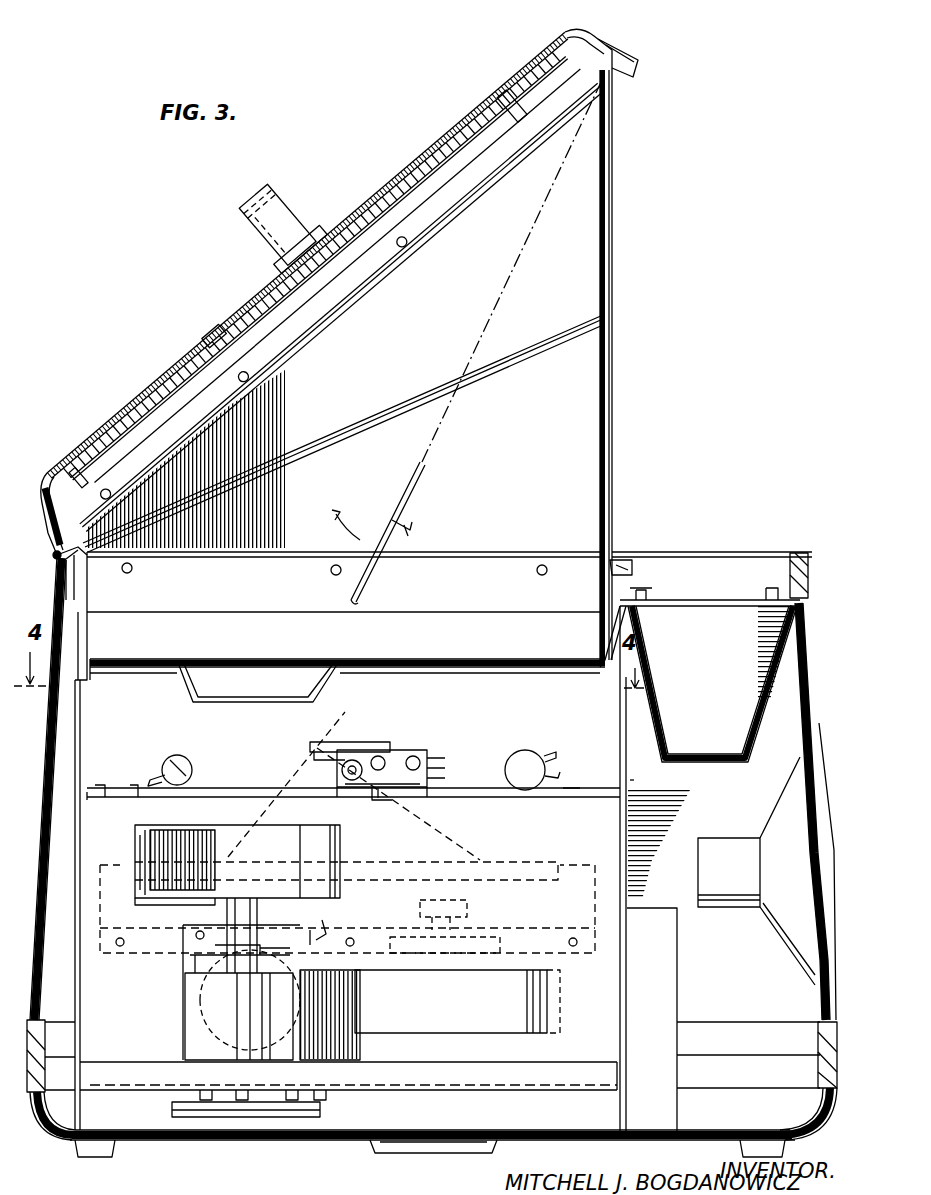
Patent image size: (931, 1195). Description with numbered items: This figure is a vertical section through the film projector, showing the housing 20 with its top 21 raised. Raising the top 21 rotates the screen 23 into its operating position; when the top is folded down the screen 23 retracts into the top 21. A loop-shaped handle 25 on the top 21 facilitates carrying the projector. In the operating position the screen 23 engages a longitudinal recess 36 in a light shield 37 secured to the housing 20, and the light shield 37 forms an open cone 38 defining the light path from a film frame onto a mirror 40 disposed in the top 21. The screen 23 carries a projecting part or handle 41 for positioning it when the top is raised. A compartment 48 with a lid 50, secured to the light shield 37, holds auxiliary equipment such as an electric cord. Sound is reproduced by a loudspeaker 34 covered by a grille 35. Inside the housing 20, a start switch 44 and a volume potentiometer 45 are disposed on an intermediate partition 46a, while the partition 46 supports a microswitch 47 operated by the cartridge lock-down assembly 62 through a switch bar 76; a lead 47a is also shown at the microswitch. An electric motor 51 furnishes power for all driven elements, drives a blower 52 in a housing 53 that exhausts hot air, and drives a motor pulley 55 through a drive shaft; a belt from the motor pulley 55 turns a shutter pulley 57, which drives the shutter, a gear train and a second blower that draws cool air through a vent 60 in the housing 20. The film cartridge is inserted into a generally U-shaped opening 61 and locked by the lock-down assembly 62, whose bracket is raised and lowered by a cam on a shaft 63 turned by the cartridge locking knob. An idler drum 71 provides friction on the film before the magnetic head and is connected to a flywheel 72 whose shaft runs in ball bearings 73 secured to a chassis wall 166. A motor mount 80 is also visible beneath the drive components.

The housing 20 is at (54, 738).
The top 21 is at (466, 128).
The screen 23 is at (516, 290).
The handle 25 is at (268, 188).
The loudspeaker 34 is at (768, 834).
The grille 35 is at (826, 822).
The longitudinal recess 36 is at (600, 658).
The light shield 37 is at (406, 660).
The open cone 38 is at (318, 686).
The mirror 40 is at (378, 280).
The handle 41 is at (412, 524).
The start switch 44 is at (185, 758).
The volume potentiometer 45 is at (522, 762).
The partition 46 is at (570, 808).
The intermediate partition 46a is at (353, 756).
The microswitch 47 is at (412, 750).
The switch lead 47a is at (374, 796).
The compartment 48 is at (654, 680).
The lid 50 is at (676, 598).
The electric motor 51 is at (356, 1012).
The blower 52 is at (170, 860).
The housing 53 is at (288, 836).
The motor pulley 55 is at (250, 1102).
The shutter pulley 57 is at (188, 1120).
The vent 60 is at (428, 1156).
The U-shaped opening 61 is at (98, 915).
The lock-down assembly 62 is at (440, 822).
The shaft 63 is at (342, 770).
The idler drum 71 is at (468, 908).
The flywheel 72 is at (535, 1012).
The ball bearings 73 is at (502, 948).
The switch bar 76 is at (312, 750).
The motor 80 is at (190, 932).
The chassis wall 166 is at (330, 932).